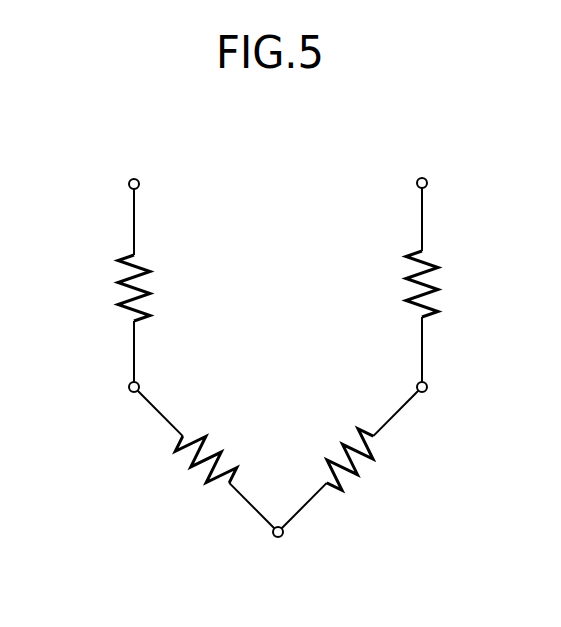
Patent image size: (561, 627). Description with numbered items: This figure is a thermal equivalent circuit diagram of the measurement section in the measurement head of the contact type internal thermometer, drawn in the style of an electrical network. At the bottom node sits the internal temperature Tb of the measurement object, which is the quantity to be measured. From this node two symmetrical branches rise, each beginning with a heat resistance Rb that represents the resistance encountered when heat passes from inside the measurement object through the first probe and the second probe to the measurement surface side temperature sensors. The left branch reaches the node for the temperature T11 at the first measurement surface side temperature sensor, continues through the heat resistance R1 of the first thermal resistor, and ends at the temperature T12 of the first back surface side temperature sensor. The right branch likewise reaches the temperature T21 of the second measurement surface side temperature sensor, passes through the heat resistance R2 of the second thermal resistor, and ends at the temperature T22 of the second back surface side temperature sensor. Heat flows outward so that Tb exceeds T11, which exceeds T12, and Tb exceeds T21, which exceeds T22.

The temperature at the first back surface side temperature sensor T12 is at (108, 181).
The heat resistance of the first thermal resistor R1 is at (114, 288).
The temperature at the first measurement surface side temperature sensor T11 is at (108, 382).
The temperature of the second back surface side temperature sensor T22 is at (451, 181).
The heat resistance of the second thermal resistor R2 is at (443, 284).
The temperature of the second measurement surface side temperature sensor T21 is at (451, 382).
The heat resistance Rb is at (280, 465).
The internal temperature Tb is at (279, 550).